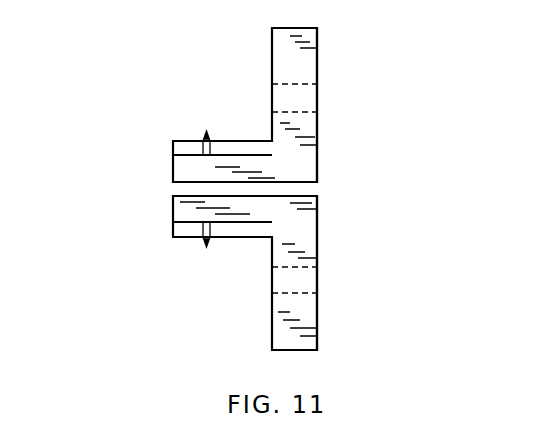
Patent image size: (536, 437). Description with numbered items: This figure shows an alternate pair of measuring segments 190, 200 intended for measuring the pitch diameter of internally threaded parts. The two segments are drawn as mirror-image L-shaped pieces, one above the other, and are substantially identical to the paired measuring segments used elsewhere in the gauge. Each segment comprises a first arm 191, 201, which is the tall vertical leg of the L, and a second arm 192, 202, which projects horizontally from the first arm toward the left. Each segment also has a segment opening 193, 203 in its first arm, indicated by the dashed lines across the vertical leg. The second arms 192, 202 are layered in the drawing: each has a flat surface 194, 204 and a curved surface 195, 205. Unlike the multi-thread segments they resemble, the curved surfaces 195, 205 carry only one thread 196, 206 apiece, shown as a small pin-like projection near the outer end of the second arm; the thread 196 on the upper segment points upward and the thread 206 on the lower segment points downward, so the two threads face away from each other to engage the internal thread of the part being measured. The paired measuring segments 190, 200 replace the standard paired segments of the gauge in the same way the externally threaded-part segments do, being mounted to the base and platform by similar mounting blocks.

The measuring segment 190 is at (264, 35).
The first arm 191 is at (317, 48).
The segment opening 193 is at (272, 95).
The second arm 192 is at (200, 170).
The flat surface 194 is at (173, 163).
The curved surface 195 is at (173, 147).
The thread 196 is at (205, 131).
The measuring segment 200 is at (264, 329).
The first arm 201 is at (318, 328).
The segment opening 203 is at (272, 280).
The second arm 202 is at (205, 196).
The flat surface 204 is at (173, 205).
The curved surface 205 is at (173, 230).
The thread 206 is at (205, 247).